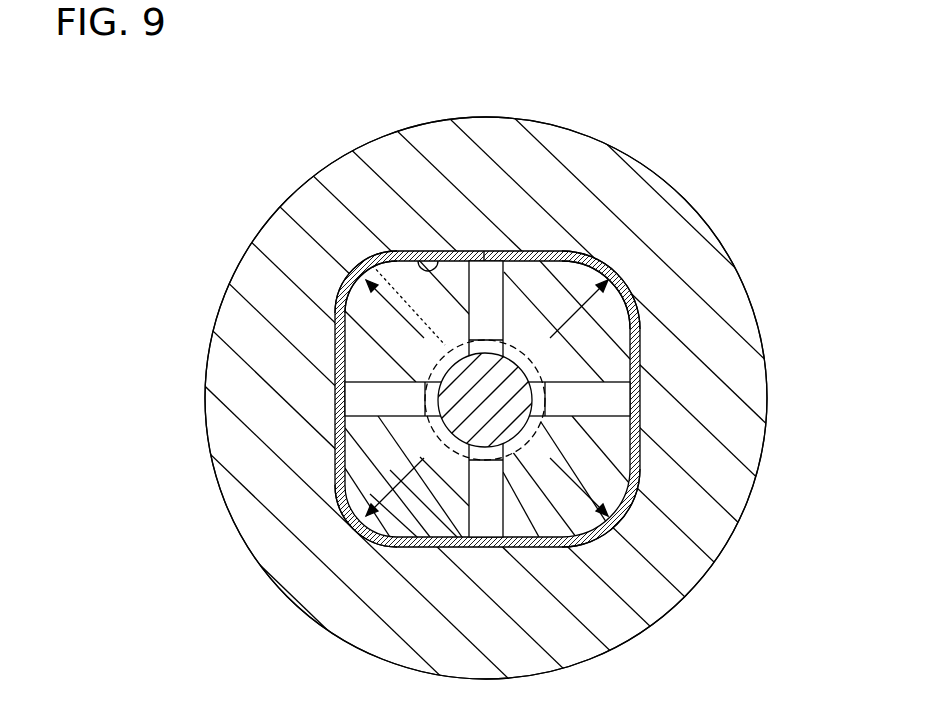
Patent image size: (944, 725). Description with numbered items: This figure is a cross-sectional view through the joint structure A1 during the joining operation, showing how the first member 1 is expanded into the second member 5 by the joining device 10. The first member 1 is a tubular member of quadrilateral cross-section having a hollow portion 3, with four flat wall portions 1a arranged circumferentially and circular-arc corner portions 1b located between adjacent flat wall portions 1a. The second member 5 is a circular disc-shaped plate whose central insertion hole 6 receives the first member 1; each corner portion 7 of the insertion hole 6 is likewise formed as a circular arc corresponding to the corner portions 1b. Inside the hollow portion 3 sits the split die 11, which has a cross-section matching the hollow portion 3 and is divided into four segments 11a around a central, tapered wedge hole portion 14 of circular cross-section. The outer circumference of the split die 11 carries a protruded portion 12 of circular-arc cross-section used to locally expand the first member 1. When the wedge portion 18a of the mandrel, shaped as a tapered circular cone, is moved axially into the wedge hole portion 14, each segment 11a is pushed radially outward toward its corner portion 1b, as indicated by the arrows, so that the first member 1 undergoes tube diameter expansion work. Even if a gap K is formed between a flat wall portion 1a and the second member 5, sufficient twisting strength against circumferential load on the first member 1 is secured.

The first member 1 is at (577, 260).
The flat wall portion 1a is at (482, 252).
The corner portion 1b is at (349, 256).
The hollow portion 3 is at (603, 264).
The second member 5 is at (557, 177).
The insertion hole 6 is at (425, 259).
The corner portion 7 is at (360, 268).
The joining device 10 is at (631, 318).
The split die 11 is at (337, 305).
The segment 11a is at (397, 343).
The protruded portion 12 is at (395, 268).
The wedge hole portion 14 is at (447, 440).
The wedge portion 18a is at (512, 452).
The joint structure A1 is at (790, 158).
The gap K is at (486, 252).